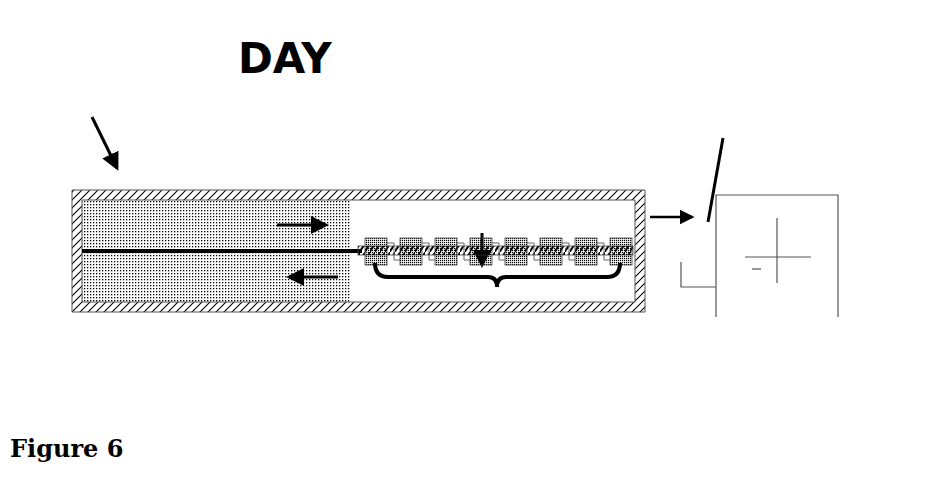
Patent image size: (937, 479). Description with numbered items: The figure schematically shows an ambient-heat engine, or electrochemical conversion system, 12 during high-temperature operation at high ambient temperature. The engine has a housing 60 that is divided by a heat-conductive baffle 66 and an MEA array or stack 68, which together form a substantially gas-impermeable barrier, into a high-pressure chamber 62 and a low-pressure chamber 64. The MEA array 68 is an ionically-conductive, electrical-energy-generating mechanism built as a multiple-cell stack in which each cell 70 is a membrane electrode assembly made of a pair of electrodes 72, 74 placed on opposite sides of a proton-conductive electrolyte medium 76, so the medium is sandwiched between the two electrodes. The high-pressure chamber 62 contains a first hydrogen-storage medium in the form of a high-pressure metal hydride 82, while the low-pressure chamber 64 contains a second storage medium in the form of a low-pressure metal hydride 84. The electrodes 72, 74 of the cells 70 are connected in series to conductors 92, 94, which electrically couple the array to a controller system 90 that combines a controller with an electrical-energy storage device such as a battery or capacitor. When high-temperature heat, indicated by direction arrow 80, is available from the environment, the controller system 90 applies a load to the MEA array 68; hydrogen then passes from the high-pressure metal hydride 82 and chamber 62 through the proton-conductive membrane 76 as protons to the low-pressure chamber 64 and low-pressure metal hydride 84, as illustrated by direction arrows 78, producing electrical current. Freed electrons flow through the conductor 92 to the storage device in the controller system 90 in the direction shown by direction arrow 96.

The ambient-heat engine 12 is at (366, 108).
The housing 60 is at (215, 192).
The high-pressure chamber 62 is at (597, 212).
The low-pressure chamber 64 is at (445, 292).
The heat-conductive baffle 66 is at (227, 253).
The MEA array 68 is at (494, 260).
The cell 70 is at (368, 262).
The electrode 72 is at (375, 245).
The electrode 74 is at (373, 258).
The proton-conductive electrolyte medium 76 is at (563, 253).
The direction arrows 78 is at (305, 224).
The direction arrow 80 is at (97, 113).
The high-pressure metal hydride 82 is at (102, 233).
The low-pressure metal hydride 84 is at (115, 285).
The controller system 90 is at (777, 268).
The conductor 92 is at (723, 167).
The conductor 94 is at (696, 286).
The direction arrow 96 is at (662, 212).